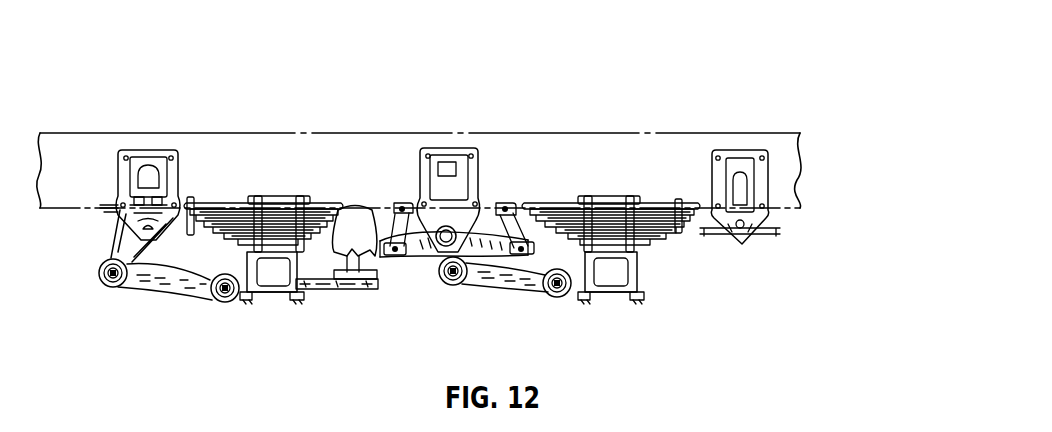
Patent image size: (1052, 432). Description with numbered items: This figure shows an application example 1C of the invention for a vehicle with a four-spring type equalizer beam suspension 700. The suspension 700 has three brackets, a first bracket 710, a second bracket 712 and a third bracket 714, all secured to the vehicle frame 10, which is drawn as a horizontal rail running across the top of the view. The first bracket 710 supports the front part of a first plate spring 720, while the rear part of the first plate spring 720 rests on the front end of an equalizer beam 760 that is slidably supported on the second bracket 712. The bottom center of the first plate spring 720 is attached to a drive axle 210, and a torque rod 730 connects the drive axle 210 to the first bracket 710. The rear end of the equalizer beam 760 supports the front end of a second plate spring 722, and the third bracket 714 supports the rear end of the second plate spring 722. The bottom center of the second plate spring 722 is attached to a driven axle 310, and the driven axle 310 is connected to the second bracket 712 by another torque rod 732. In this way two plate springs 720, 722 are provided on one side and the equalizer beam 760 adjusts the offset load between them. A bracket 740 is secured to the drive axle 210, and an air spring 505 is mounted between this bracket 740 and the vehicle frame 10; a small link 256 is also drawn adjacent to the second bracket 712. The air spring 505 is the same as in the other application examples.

The vehicle frame 10 is at (368, 150).
The application example 1C is at (672, 64).
The suspension 700 is at (500, 104).
The first bracket 710 is at (147, 162).
The second bracket 712 is at (447, 162).
The third bracket 714 is at (737, 166).
The first plate spring 720 is at (226, 212).
The second plate spring 722 is at (606, 218).
The torque rod 730 is at (156, 281).
The torque rod 732 is at (511, 284).
The bracket 740 is at (360, 290).
The equalizer beam 760 is at (424, 252).
The air spring 505 is at (340, 200).
The link 256 is at (388, 205).
The drive axle 210 is at (262, 278).
The driven axle 310 is at (606, 279).